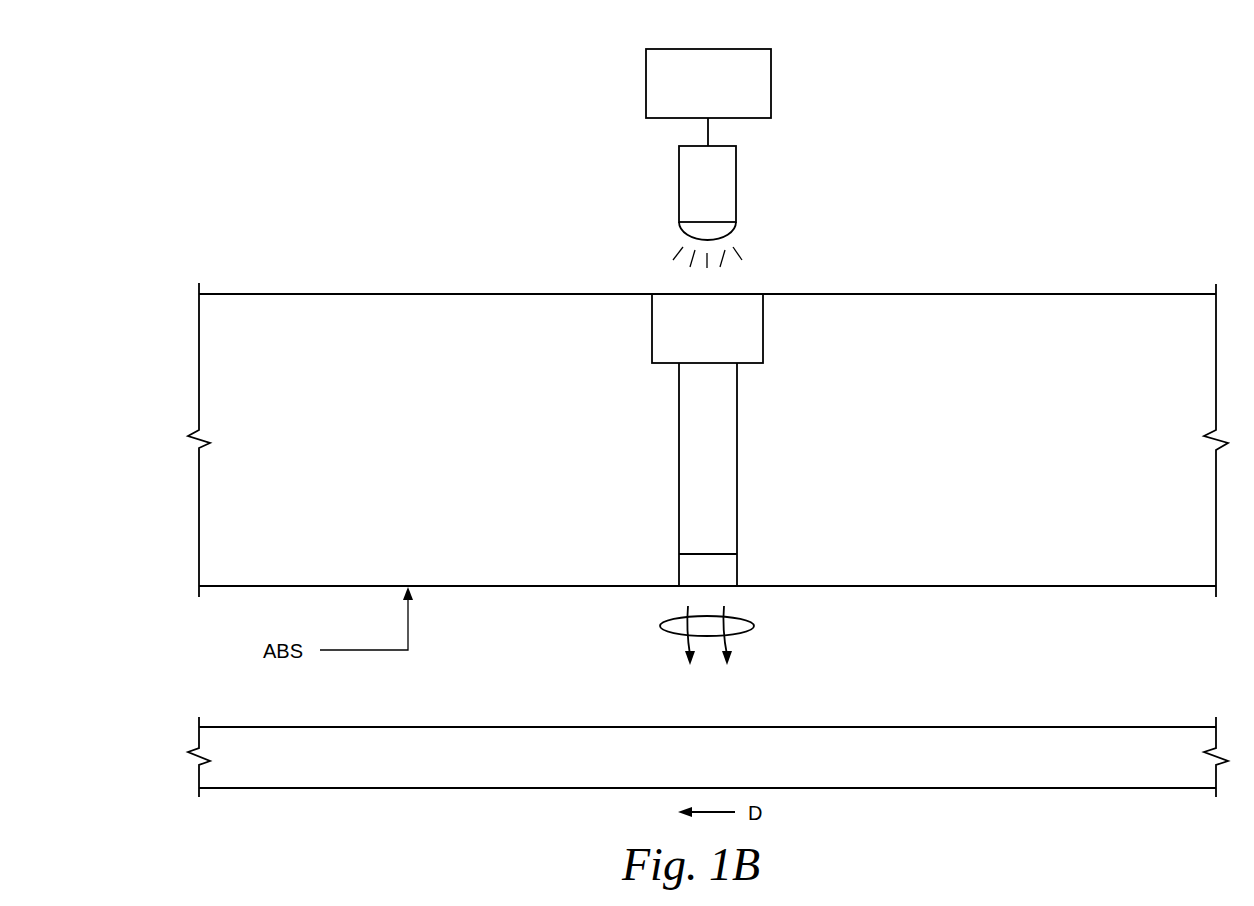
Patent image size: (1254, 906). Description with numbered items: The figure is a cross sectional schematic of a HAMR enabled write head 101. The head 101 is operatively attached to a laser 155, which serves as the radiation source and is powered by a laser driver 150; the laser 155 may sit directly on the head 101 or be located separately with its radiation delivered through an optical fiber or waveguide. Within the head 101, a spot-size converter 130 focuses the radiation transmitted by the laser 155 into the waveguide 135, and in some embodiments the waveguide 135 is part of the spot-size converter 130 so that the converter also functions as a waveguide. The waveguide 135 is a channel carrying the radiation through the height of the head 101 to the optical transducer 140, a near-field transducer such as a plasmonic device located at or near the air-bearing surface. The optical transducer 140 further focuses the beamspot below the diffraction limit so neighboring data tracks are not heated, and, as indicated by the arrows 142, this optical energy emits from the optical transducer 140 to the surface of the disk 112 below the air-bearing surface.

The HAMR enabled write head 101 is at (298, 237).
The disk 112 is at (1010, 788).
The spot-size converter (SSC) 130 is at (652, 332).
The waveguide 135 is at (679, 512).
The optical transducer 140 is at (679, 567).
The arrows 142 is at (660, 627).
The laser driver 150 is at (771, 67).
The laser 155 is at (682, 165).